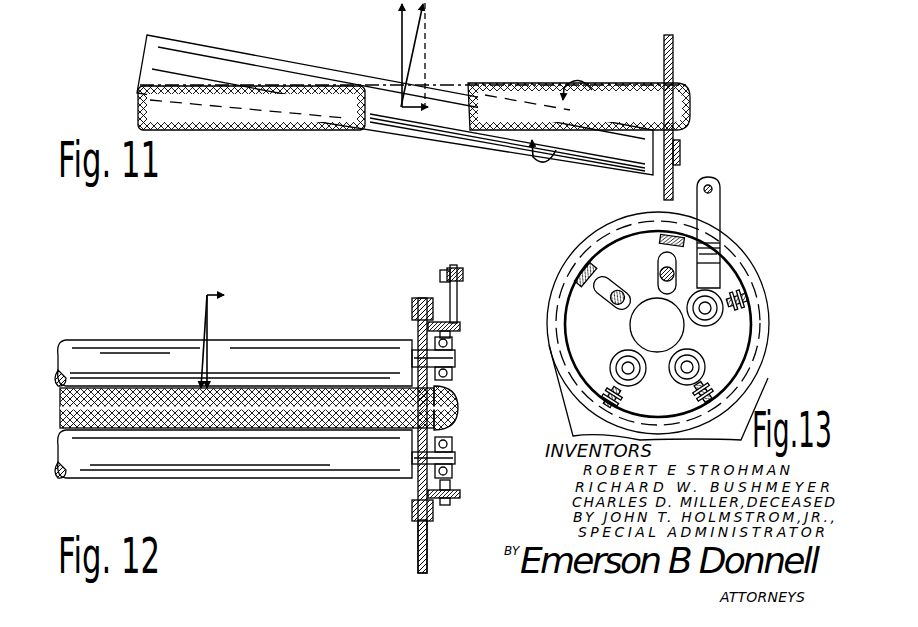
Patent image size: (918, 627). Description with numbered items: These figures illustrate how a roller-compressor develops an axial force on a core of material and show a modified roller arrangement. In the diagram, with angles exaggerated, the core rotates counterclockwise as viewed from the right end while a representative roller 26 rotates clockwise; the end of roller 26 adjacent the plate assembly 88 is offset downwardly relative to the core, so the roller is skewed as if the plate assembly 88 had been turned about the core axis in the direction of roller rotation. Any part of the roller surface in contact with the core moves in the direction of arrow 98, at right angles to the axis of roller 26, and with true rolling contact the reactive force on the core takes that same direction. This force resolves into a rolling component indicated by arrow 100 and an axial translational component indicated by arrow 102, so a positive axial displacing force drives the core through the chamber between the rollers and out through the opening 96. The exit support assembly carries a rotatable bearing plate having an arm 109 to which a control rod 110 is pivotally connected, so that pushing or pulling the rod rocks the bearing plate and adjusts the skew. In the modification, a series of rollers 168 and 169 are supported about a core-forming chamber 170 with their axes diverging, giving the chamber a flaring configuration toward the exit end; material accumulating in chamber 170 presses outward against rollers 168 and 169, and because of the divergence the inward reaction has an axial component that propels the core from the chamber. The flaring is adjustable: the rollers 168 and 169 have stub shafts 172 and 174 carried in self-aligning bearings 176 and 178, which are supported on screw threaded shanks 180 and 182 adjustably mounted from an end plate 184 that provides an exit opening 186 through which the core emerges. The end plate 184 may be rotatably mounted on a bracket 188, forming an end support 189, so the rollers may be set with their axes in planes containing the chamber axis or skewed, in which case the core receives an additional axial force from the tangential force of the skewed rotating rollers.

In FIG. 11, the roller 26 is at (256, 72).
In FIG. 11, the plate assembly 88 is at (700, 75).
In FIG. 11, the opening 96 is at (654, 80).
In FIG. 11, the arrow 98 is at (426, 30).
In FIG. 11, the arrow 100 is at (398, 44).
In FIG. 11, the arrow 102 is at (424, 85).
In FIG. 12, the arm 109 is at (458, 296).
In FIG. 13, the arm 109 is at (712, 228).
In FIG. 12, the control rod 110 is at (462, 270).
In FIG. 12, the roller 168 is at (300, 338).
In FIG. 12, the roller 169 is at (200, 478).
In FIG. 12, the core-forming chamber 170 is at (244, 410).
In FIG. 12, the stub shaft 172 is at (458, 358).
In FIG. 13, the stub shaft 172 is at (658, 272).
In FIG. 12, the stub shaft 174 is at (458, 458).
In FIG. 13, the stub shaft 174 is at (624, 368).
In FIG. 12, the self-aligning bearing 176 is at (455, 342).
In FIG. 12, the self-aligning bearing 178 is at (455, 442).
In FIG. 13, the self-aligning bearing 178 is at (620, 350).
In FIG. 12, the screw threaded shank 180 is at (438, 298).
In FIG. 12, the screw threaded shank 182 is at (454, 480).
In FIG. 13, the screw threaded shank 182 is at (612, 412).
In FIG. 12, the end plate 184 is at (417, 497).
In FIG. 13, the end plate 184 is at (622, 248).
In FIG. 12, the exit opening 186 is at (450, 394).
In FIG. 13, the exit opening 186 is at (636, 340).
In FIG. 12, the bracket 188 is at (417, 550).
In FIG. 13, the bracket 188 is at (658, 399).
In FIG. 12, the end support 189 is at (472, 504).